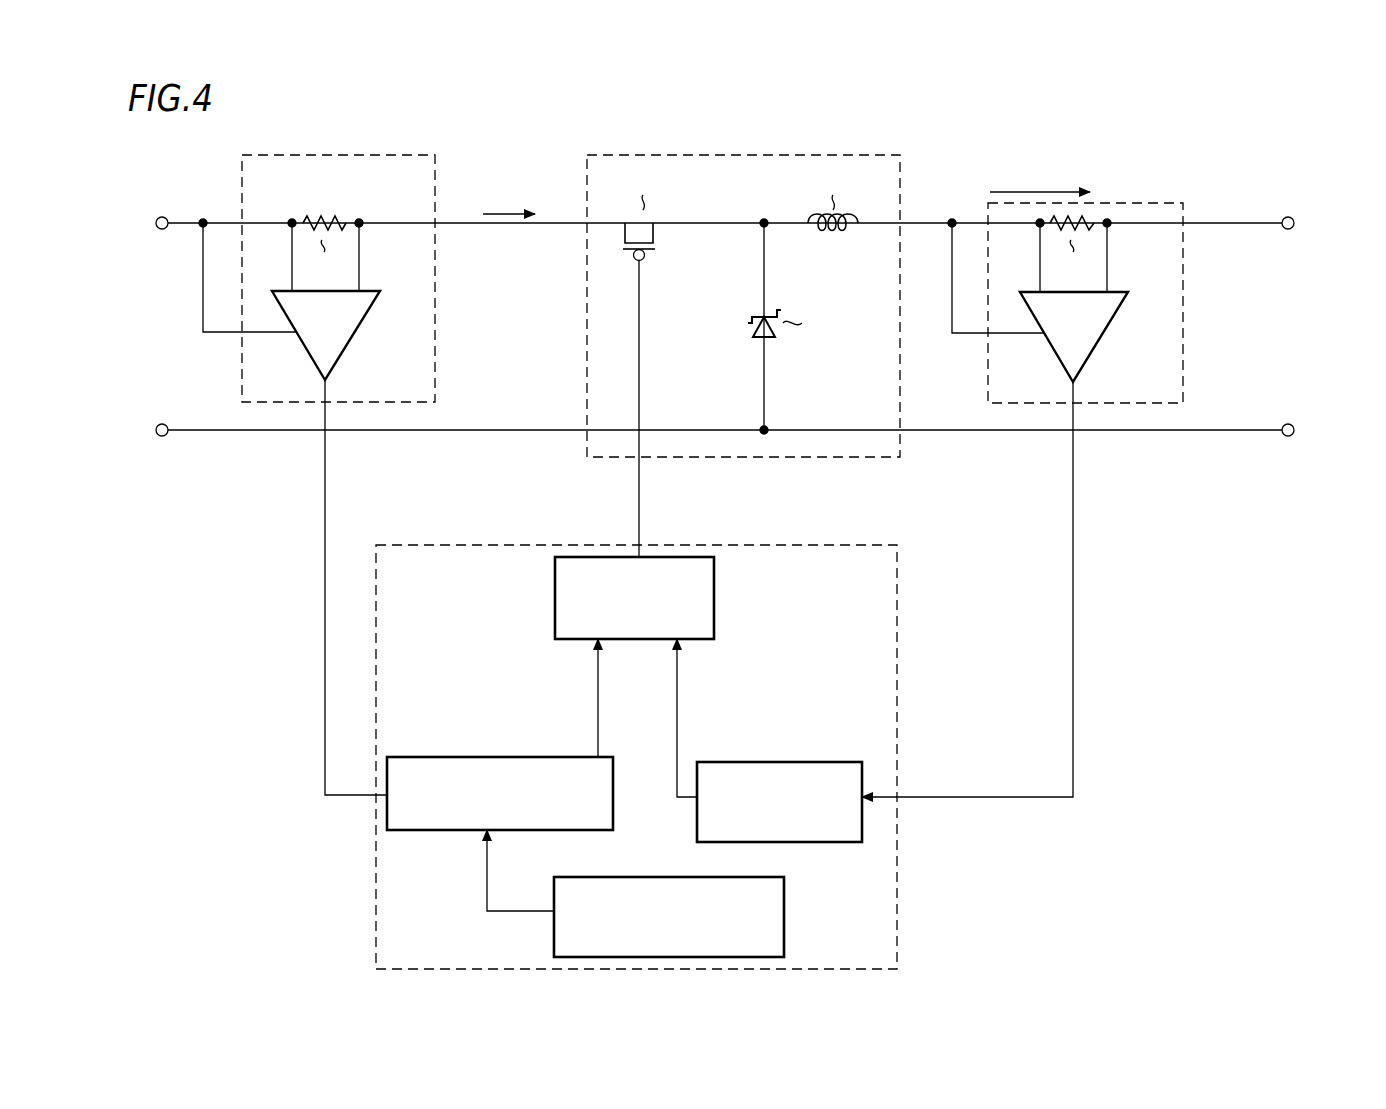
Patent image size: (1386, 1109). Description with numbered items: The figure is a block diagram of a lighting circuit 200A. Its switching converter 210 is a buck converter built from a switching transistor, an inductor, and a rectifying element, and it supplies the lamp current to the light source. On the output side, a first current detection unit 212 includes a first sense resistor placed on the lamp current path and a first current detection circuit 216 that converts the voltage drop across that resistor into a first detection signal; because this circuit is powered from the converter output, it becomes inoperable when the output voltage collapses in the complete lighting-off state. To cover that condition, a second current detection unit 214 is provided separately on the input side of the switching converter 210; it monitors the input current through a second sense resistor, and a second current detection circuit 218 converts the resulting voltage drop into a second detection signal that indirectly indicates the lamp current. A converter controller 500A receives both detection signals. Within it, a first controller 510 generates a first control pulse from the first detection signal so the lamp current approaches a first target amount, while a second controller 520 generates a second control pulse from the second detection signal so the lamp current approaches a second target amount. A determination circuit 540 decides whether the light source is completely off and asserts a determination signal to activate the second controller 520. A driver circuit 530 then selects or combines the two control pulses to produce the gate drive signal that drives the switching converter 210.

The lighting circuit 200A is at (1383, 99).
The second current detection unit 214 is at (370, 155).
The second current detection circuit 218 is at (355, 338).
The switching converter 210 is at (753, 153).
The first current detection unit 212 is at (1185, 294).
The first current detection circuit 216 is at (1103, 338).
The converter controller 500A is at (898, 897).
The driver circuit 530 is at (718, 602).
The second controller 520 is at (500, 750).
The first controller 510 is at (785, 752).
The determination circuit 540 is at (630, 868).